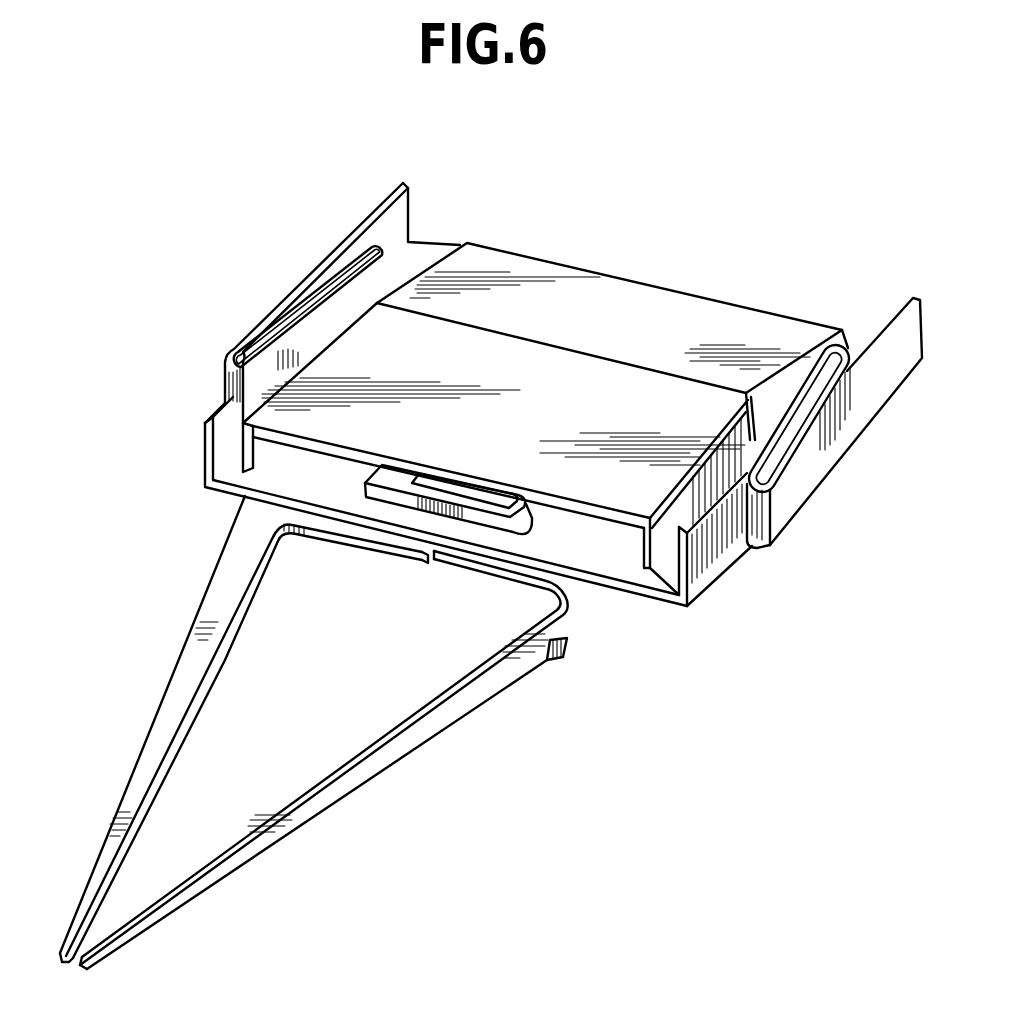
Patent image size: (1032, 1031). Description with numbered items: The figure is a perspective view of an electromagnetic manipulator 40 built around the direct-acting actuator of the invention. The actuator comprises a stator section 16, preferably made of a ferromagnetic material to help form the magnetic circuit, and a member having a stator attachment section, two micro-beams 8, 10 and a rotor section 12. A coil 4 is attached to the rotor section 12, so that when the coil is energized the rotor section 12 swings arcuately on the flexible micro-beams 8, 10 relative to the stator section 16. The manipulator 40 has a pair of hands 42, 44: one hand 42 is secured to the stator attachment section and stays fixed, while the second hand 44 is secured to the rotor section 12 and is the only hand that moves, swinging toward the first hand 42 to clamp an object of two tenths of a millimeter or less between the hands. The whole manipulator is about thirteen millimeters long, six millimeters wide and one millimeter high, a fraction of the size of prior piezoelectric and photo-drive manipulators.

The coil 4 is at (533, 517).
The micro-beam 8 is at (763, 533).
The micro-beam 10 is at (237, 380).
The rotor section 12 is at (307, 490).
The stator section 16 is at (367, 370).
The electromagnetic manipulator 40 is at (545, 369).
The hand 42 is at (363, 760).
The hand 44 is at (147, 763).